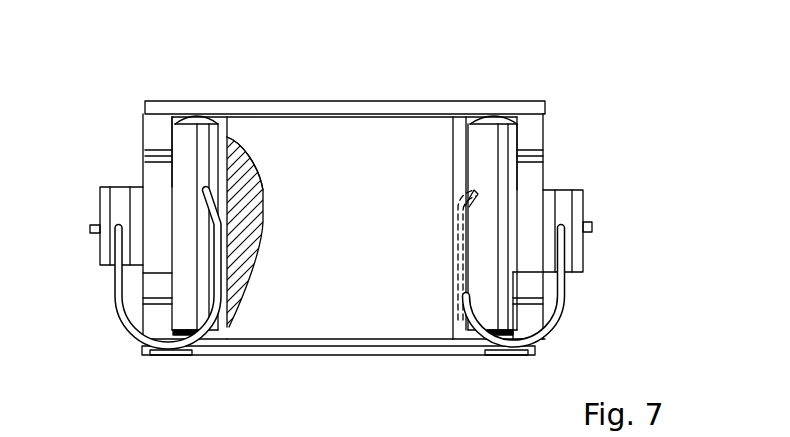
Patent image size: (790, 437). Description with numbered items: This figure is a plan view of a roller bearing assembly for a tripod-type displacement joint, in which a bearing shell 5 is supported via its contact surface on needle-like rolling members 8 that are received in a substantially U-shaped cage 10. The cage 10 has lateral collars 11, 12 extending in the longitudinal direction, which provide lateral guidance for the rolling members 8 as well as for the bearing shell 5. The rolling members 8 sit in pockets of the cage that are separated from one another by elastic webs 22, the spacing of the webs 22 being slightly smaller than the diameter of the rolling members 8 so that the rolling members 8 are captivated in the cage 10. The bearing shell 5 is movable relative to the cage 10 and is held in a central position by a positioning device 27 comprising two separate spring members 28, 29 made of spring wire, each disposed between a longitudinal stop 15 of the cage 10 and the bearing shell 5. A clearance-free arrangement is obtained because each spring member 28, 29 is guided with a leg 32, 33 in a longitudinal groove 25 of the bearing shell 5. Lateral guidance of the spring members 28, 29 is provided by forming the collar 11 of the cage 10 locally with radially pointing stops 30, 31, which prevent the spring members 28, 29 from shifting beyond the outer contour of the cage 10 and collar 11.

The bearing shell 5 is at (357, 253).
The rolling members 8 is at (157, 140).
The cage 10 is at (545, 172).
The collar 11 is at (366, 353).
The collar 12 is at (187, 110).
The longitudinal stop 15 is at (107, 202).
The webs 22 is at (187, 142).
The longitudinal groove 25 is at (229, 131).
The positioning device 27 is at (112, 336).
The spring member 28 is at (117, 295).
The spring member 29 is at (566, 306).
The stop 30 is at (180, 348).
The stop 31 is at (510, 352).
The leg 32 is at (224, 285).
The leg 33 is at (474, 190).